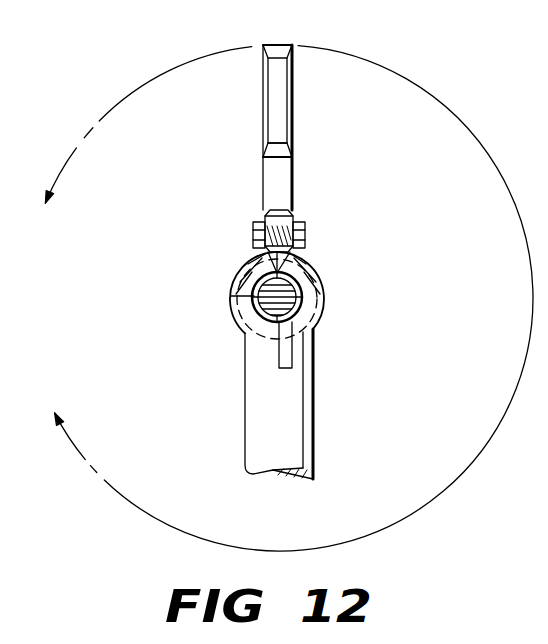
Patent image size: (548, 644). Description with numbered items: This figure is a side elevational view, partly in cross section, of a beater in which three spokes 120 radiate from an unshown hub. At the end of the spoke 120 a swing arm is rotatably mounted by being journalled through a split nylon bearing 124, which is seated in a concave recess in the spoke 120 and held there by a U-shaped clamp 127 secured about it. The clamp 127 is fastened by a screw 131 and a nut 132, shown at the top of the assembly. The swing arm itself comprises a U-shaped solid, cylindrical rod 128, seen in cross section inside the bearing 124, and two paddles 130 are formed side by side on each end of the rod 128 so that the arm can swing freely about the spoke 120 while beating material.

The spoke 120 is at (290, 422).
The split nylon bearing 124 is at (258, 314).
The U-shaped clamp 127 is at (327, 315).
The cylindrical rod 128 is at (283, 295).
The paddle 130 is at (293, 135).
The screw 131 is at (253, 223).
The nut 132 is at (300, 222).